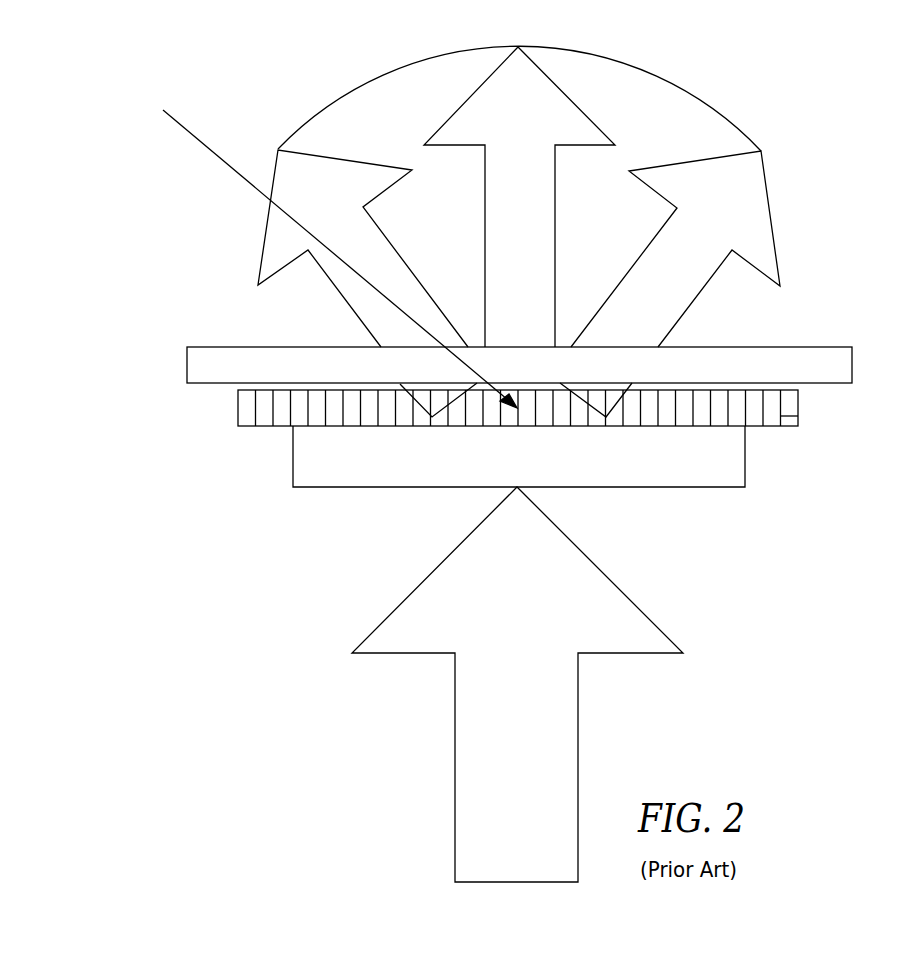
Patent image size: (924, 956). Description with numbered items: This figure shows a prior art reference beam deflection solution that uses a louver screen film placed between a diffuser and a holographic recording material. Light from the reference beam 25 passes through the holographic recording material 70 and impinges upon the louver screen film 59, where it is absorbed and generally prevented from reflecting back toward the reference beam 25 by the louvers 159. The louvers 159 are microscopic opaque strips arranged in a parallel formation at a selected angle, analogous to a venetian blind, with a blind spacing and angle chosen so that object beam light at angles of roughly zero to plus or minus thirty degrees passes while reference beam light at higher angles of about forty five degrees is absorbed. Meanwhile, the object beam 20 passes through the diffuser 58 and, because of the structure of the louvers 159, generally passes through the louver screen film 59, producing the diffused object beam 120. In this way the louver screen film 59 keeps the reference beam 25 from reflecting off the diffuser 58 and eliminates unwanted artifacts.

The diffused object beam 120 is at (642, 71).
The reference beam 25 is at (182, 128).
The holographic recording material 70 is at (852, 370).
The louver screen film 59 is at (798, 402).
The louvers 159 is at (798, 417).
The diffuser 58 is at (745, 477).
The object beam 20 is at (622, 588).